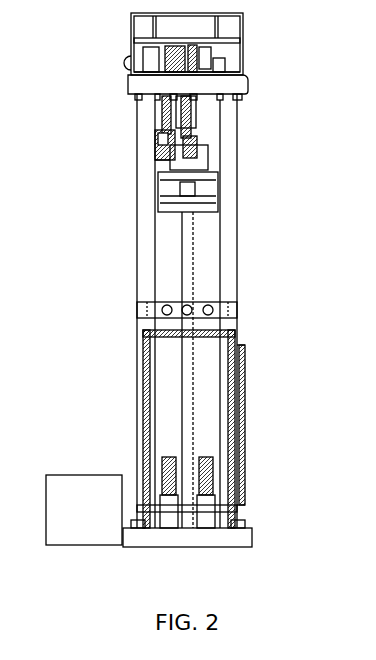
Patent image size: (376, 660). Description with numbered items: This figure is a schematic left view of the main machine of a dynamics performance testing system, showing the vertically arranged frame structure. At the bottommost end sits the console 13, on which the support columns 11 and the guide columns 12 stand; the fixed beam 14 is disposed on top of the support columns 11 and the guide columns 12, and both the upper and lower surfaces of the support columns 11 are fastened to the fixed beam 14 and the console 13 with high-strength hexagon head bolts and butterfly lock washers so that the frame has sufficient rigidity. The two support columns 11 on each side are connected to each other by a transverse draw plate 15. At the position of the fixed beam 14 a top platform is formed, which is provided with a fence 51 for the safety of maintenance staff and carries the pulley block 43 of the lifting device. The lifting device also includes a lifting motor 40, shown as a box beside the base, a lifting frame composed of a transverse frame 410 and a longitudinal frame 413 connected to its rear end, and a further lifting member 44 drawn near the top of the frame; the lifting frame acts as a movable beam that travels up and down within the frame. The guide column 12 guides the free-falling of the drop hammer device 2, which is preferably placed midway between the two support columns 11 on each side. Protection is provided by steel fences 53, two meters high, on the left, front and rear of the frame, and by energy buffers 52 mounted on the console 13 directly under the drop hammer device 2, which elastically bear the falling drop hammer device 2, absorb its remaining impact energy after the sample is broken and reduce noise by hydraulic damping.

The fence 51 is at (132, 28).
The pulley block 43 is at (128, 64).
The fixed beam 14 is at (241, 83).
The support column 11 is at (137, 182).
The lifting rod 44 is at (200, 120).
The longitudinal frame 413 is at (140, 139).
The transverse frame 410 is at (200, 155).
The drop hammer device 2 is at (217, 212).
The guide column 12 is at (190, 258).
The transverse draw plate 15 is at (238, 312).
The steel fence 53 is at (148, 364).
The energy buffer 52 is at (207, 483).
The console 13 is at (246, 538).
The lifting motor 40 is at (107, 489).